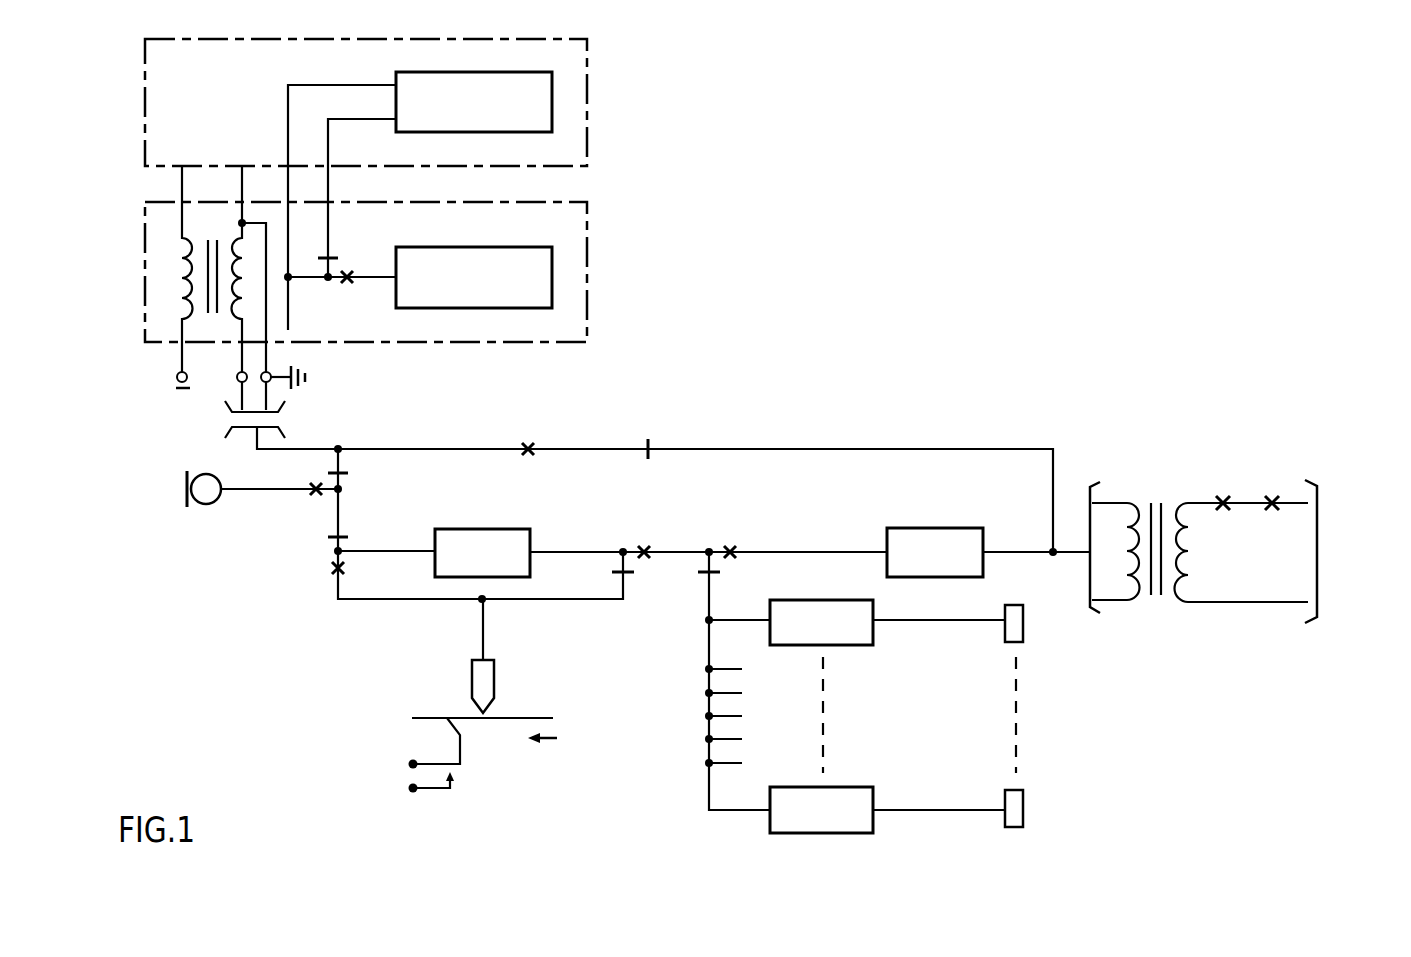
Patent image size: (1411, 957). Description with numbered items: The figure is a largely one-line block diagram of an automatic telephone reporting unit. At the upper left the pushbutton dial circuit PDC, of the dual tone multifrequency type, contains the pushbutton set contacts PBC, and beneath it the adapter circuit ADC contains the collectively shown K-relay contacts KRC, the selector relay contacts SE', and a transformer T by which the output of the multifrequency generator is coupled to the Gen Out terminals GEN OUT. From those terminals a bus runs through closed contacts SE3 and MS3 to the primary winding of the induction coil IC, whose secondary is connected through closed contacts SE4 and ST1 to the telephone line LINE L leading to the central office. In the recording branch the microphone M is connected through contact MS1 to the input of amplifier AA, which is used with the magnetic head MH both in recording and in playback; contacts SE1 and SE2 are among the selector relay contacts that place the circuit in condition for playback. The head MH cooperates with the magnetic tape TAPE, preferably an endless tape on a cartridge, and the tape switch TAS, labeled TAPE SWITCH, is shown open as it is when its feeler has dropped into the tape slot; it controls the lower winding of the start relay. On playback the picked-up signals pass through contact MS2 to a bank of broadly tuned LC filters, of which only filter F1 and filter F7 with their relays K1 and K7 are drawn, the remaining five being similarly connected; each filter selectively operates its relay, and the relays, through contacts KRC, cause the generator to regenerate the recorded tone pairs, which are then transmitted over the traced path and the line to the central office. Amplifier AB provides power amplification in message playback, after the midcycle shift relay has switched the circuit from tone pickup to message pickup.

The pushbutton dial circuit PDC is at (587, 95).
The pushbutton set contacts PBC is at (510, 126).
The adapter circuit ADC is at (587, 272).
The K-relay contacts KRC is at (511, 302).
The transformer T is at (218, 240).
The selector relay contacts SE' is at (345, 259).
The Gen Out terminals GEN OUT is at (243, 401).
The selector relay contact SE3 is at (530, 441).
The midcycle shift relay contact MS3 is at (648, 441).
The midcycle shift relay contact MS1 is at (324, 475).
The microphone M is at (212, 503).
The selector relay contact SE1 is at (314, 555).
The amplifier AA is at (418, 550).
The selector relay contact SE2 is at (644, 562).
The midcycle shift relay contact MS2 is at (730, 562).
The filter F1 is at (821, 622).
The filter F7 is at (821, 810).
The relay K1 is at (1012, 605).
The relay K7 is at (1020, 812).
The amplifier AB is at (860, 550).
The induction coil IC is at (1164, 504).
The selector relay contact SE4 is at (1221, 497).
The start relay contact ST1 is at (1269, 497).
The telephone line LINE L is at (1234, 551).
The magnetic head MH is at (494, 674).
The magnetic tape TAPE is at (548, 720).
The tape switch TAS is at (463, 771).
The tape switch TAPE SWITCH is at (336, 728).